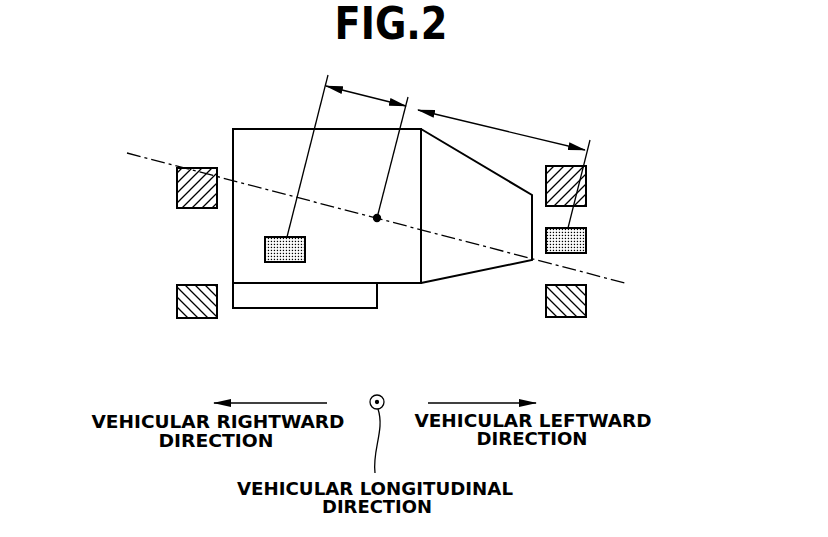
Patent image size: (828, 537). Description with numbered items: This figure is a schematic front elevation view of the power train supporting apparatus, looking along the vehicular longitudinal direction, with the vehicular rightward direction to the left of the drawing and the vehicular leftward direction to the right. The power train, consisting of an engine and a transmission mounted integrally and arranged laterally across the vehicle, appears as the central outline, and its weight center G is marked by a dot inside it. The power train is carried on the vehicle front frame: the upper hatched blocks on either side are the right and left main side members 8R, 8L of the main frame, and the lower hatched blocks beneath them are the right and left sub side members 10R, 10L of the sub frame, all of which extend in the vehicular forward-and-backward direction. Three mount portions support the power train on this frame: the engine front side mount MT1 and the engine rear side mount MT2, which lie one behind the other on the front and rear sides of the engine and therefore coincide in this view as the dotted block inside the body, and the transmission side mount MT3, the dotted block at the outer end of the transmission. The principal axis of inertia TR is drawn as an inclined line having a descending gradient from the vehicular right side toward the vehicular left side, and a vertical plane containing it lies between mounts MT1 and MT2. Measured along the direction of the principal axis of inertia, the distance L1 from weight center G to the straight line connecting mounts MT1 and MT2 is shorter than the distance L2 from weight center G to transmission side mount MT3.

The right main side member 8R is at (182, 190).
The left main side member 8L is at (584, 193).
The right sub side member 10R is at (180, 300).
The left sub side member 10L is at (573, 303).
The engine front side mount MT1 is at (283, 262).
The engine rear side mount MT2 is at (280, 312).
The transmission side mount MT3 is at (586, 240).
The principal axis of inertia TR is at (268, 188).
The weight center G is at (377, 222).
The inertia principal axis direction distance L1 is at (366, 86).
The inertia principal axis direction distance L2 is at (504, 165).